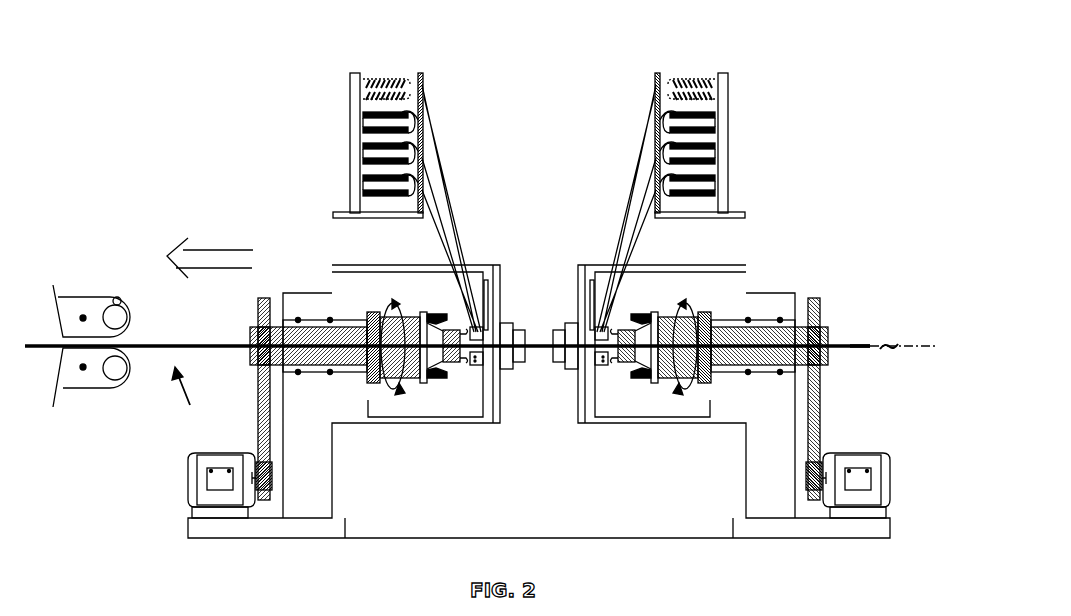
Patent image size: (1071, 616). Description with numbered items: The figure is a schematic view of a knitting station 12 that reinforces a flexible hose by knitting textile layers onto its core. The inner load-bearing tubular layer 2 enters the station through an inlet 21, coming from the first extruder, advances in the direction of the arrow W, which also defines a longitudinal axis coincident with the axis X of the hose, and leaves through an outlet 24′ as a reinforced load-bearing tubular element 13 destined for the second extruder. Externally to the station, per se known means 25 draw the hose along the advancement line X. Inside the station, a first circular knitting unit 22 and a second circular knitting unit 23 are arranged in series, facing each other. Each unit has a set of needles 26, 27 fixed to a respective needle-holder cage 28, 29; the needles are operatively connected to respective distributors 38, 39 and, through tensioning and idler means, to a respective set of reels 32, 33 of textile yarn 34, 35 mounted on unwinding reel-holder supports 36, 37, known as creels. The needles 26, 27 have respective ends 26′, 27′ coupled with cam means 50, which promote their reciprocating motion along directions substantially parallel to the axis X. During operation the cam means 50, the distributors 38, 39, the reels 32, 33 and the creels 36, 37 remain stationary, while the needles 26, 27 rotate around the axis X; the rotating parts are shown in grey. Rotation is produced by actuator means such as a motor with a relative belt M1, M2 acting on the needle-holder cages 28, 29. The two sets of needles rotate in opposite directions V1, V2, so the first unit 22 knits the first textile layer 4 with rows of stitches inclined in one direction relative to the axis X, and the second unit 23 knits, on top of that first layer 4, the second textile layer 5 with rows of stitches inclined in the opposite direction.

The inner load-bearing tubular layer 2 is at (853, 352).
The first textile layer 4 is at (540, 372).
The second textile layer 5 is at (169, 346).
The knitting station 12 is at (158, 160).
The reinforced load-bearing tubular element 13 is at (184, 396).
The inlet 21 is at (832, 328).
The first circular knitting unit 22 is at (580, 448).
The second circular knitting unit 23 is at (468, 488).
The outlet 24′ is at (232, 334).
The means for drawing the hose 25 is at (100, 378).
The set of needles 26 is at (619, 367).
The needle ends 26′ is at (653, 395).
The set of needles 27 is at (460, 366).
The needle ends 27′ is at (425, 395).
The needle-holder cage 28 is at (672, 383).
The needle-holder cage 29 is at (407, 383).
The set of reels 32 is at (690, 82).
The set of reels 33 is at (385, 82).
The textile yarn 34 is at (633, 152).
The textile yarn 35 is at (445, 160).
The reel-holder support 36 is at (728, 152).
The reel-holder support 37 is at (355, 150).
The distributor 38 is at (600, 335).
The distributor 39 is at (485, 330).
The cam means 50 is at (415, 297).
The direction of rotation V1 is at (675, 392).
The direction of rotation V2 is at (395, 410).
The motor with belt M1 is at (856, 490).
The motor with belt M2 is at (215, 476).
The direction of advancement W is at (218, 260).
The axis of the hose X is at (902, 329).